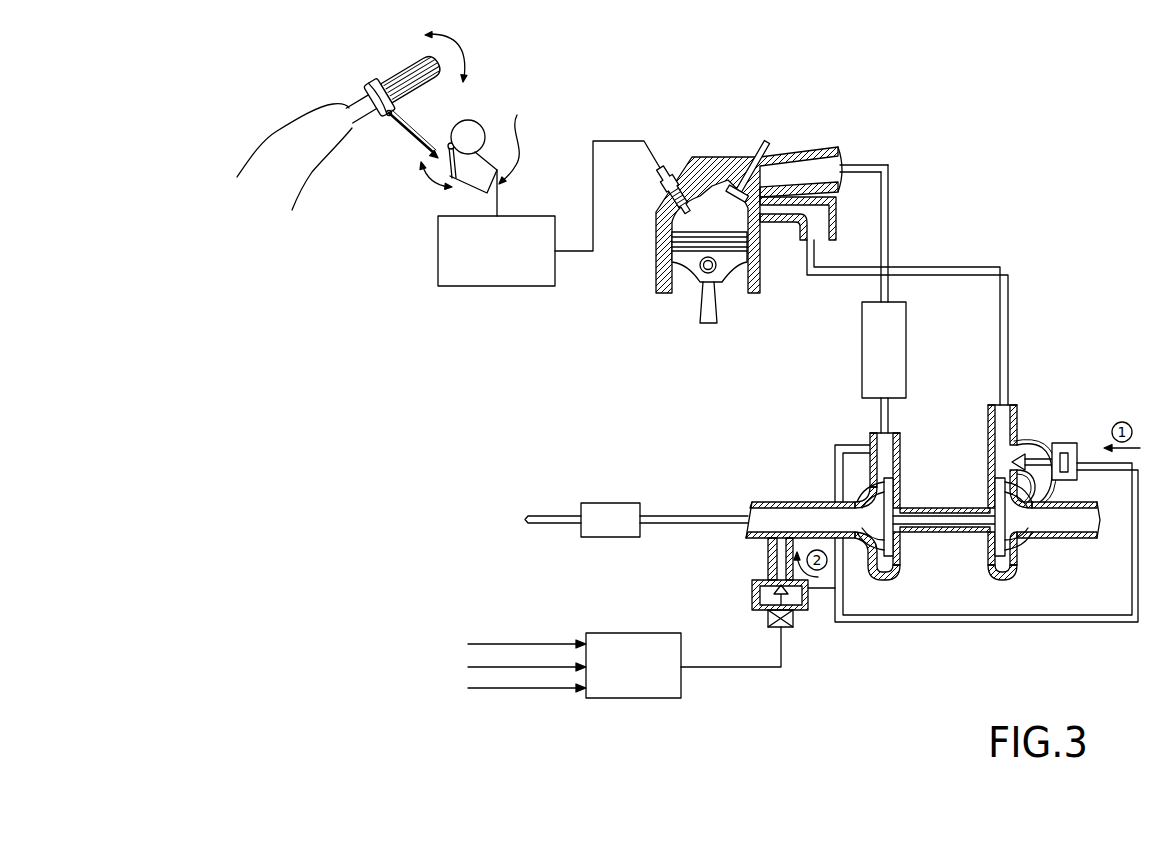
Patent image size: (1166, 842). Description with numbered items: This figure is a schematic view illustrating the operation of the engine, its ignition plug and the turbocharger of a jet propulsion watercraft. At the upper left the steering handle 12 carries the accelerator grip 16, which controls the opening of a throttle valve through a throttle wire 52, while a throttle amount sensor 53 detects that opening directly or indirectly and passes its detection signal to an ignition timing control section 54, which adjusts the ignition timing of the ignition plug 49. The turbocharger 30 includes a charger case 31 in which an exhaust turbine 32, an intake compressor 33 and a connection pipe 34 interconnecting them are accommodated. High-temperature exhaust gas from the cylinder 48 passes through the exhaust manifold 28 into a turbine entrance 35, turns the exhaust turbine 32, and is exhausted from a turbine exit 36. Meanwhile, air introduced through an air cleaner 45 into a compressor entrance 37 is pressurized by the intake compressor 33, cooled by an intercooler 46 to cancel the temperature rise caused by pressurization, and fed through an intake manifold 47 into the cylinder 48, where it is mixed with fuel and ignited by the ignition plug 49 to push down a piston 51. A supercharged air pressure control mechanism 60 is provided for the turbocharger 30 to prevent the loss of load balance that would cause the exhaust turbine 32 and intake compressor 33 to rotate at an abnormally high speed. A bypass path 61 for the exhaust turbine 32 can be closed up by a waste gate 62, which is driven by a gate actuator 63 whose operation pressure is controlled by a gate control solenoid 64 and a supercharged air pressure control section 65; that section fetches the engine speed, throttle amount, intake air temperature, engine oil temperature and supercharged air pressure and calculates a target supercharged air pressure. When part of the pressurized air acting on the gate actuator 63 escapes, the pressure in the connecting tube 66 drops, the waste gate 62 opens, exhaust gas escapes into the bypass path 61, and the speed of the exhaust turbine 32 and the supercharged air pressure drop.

The steering handle 12 is at (275, 151).
The accelerator grip 16 is at (407, 66).
The exhaust manifold 28 is at (838, 212).
The turbocharger 30 is at (828, 415).
The charger case 31 is at (989, 465).
The exhaust turbine 32 is at (1000, 583).
The intake compressor 33 is at (891, 583).
The connection pipe 34 is at (953, 522).
The turbine entrance 35 is at (998, 447).
The turbine exit 36 is at (1058, 521).
The compressor entrance 37 is at (832, 512).
The air cleaner 45 is at (612, 508).
The intercooler 46 is at (907, 325).
The intake manifold 47 is at (800, 153).
The cylinder 48 is at (657, 266).
The ignition plug 49 is at (668, 172).
The piston 51 is at (698, 291).
The throttle wire 52 is at (477, 190).
The throttle amount sensor 53 is at (467, 125).
The ignition timing control section 54 is at (497, 287).
The supercharged air pressure control mechanism 60 is at (909, 541).
The bypass path 61 is at (1036, 482).
The waste gate 62 is at (1021, 448).
The gate actuator 63 is at (1062, 443).
The gate control solenoid 64 is at (752, 618).
The supercharged air pressure control section 65 is at (622, 632).
The connecting tube 66 is at (958, 624).